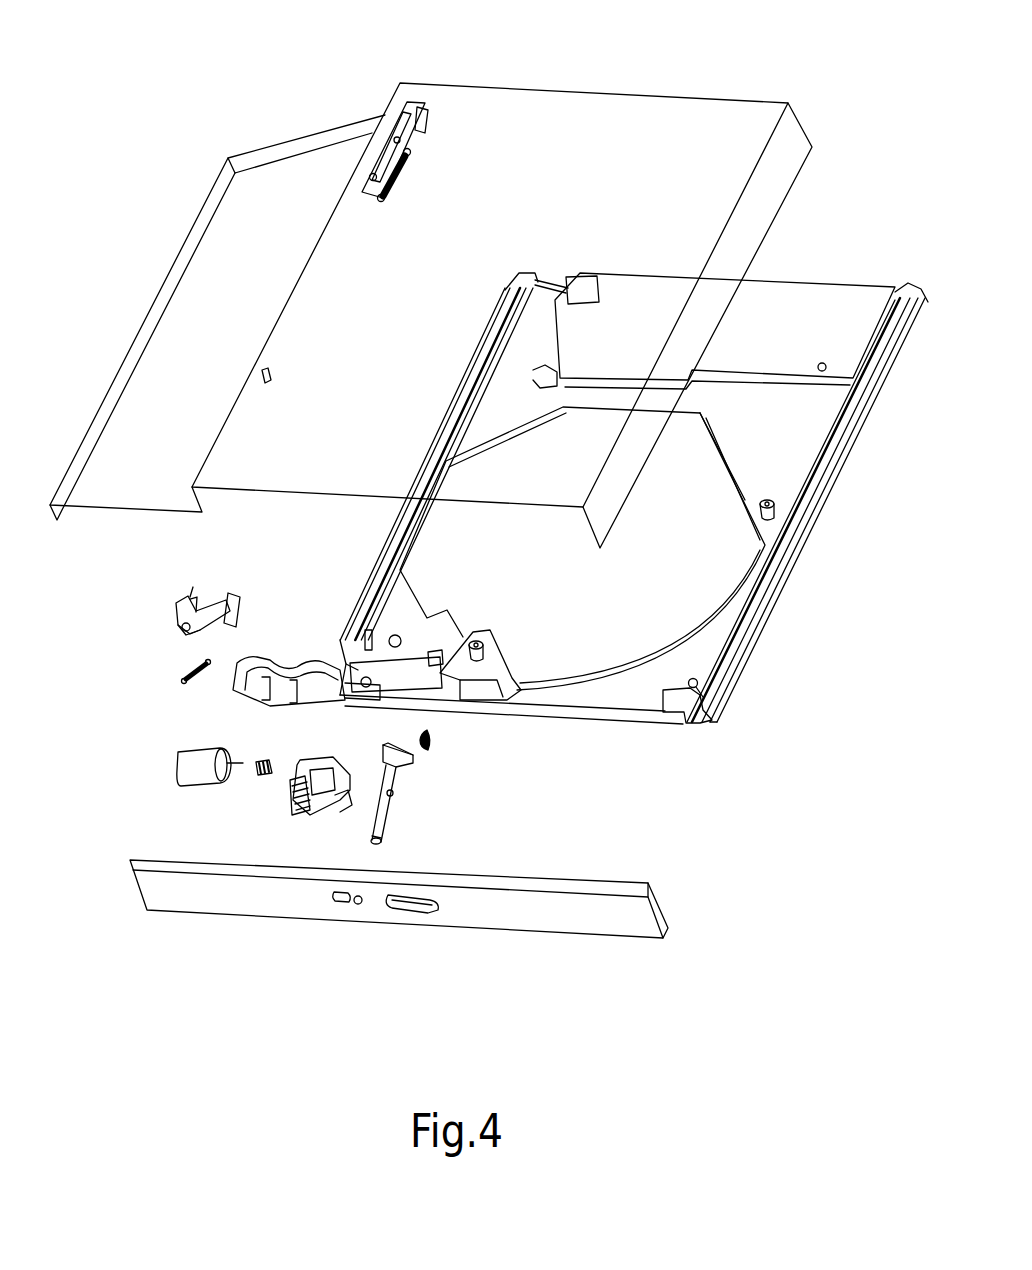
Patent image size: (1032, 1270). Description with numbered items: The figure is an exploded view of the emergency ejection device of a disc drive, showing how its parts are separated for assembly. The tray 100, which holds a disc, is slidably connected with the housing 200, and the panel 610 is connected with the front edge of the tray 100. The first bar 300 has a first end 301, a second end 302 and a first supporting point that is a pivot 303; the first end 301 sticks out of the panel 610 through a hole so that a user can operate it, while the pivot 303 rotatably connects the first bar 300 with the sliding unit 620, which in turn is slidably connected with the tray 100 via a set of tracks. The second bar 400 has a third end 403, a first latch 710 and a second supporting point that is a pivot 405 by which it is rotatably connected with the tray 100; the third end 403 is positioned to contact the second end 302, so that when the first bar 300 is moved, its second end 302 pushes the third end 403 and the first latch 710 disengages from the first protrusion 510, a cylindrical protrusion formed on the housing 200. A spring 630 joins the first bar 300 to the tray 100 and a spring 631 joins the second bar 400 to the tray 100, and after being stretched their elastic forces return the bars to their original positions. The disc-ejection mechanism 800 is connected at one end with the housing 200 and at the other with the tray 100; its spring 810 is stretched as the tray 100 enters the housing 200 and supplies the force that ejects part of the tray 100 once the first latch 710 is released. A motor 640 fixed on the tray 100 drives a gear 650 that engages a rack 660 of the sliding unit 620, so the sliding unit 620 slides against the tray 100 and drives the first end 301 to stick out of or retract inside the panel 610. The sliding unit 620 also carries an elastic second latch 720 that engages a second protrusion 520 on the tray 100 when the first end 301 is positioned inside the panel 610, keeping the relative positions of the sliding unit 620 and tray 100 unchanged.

The tray 100 is at (700, 653).
The housing 200 is at (762, 205).
The first bar 300 is at (413, 763).
The first end 301 is at (377, 838).
The second end 302 is at (383, 745).
The first supporting point (pivot) 303 is at (390, 793).
The second bar 400 is at (182, 610).
The third end 403 is at (253, 597).
The second supporting point (pivot) 405 is at (182, 638).
The first protrusion 510 is at (260, 367).
The second protrusion 520 is at (450, 637).
The panel 610 is at (573, 920).
The sliding unit 620 is at (323, 767).
The spring (first spring) 630 is at (435, 742).
The spring (second spring) 631 is at (198, 683).
The motor 640 is at (193, 753).
The gear 650 is at (265, 760).
The rack 660 is at (290, 807).
The first latch 710 is at (190, 597).
The second latch 720 is at (343, 800).
The disc-ejection mechanism 800 is at (419, 103).
The spring (third spring) 810 is at (407, 168).